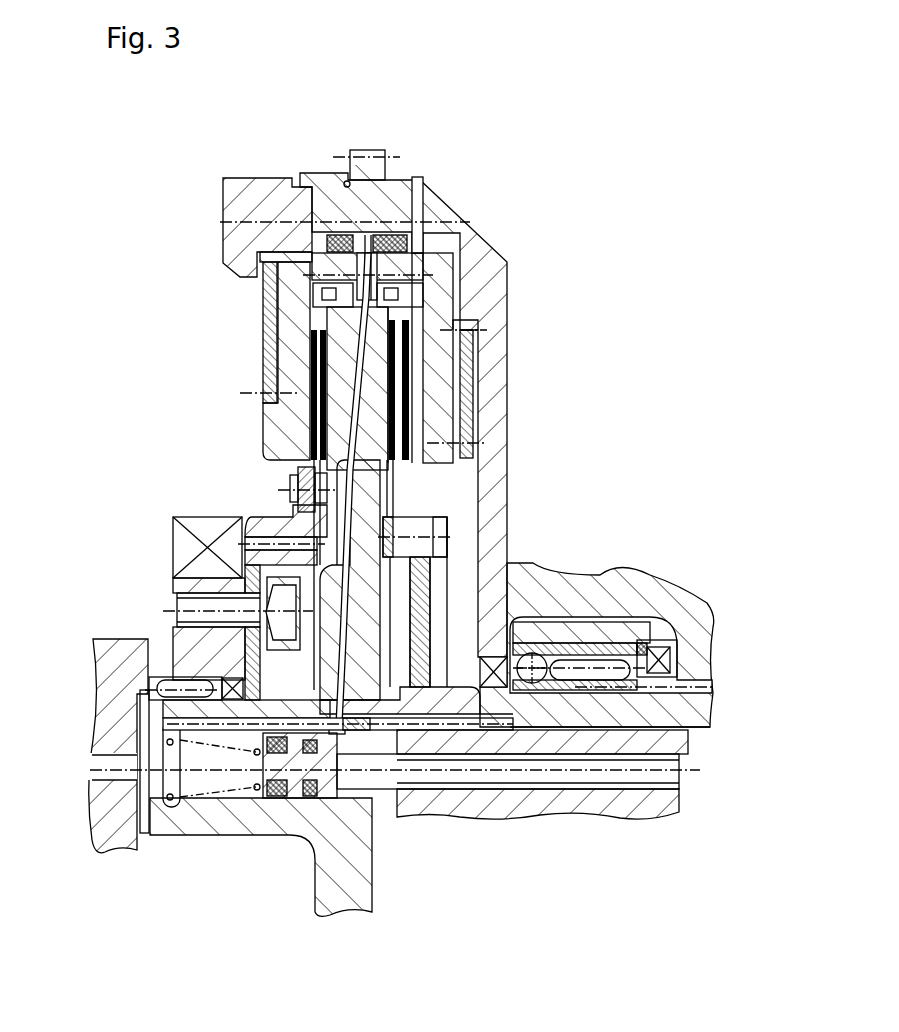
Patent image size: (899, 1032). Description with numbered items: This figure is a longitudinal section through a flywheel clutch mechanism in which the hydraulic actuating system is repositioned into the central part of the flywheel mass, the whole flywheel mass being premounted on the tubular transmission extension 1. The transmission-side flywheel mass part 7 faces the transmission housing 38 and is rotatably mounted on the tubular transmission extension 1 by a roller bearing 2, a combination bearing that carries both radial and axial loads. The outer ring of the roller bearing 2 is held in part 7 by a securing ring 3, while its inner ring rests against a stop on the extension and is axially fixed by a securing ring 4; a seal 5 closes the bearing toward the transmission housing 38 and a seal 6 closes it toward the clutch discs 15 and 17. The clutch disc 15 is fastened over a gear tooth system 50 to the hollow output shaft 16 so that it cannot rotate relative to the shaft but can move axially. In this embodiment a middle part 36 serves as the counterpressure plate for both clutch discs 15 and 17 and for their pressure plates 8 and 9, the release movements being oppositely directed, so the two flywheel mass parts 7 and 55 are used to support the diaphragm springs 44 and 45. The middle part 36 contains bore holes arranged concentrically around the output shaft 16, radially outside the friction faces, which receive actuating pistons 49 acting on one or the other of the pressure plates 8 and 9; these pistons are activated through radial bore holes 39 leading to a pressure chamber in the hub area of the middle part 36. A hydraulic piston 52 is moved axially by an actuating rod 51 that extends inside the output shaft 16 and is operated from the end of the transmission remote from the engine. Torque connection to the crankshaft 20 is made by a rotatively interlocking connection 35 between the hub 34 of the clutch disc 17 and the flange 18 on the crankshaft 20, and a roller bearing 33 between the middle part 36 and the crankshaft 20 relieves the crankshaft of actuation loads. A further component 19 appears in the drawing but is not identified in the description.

The tubular transmission extension 1 is at (673, 713).
The roller bearing 2 is at (603, 665).
The securing ring 3 is at (640, 645).
The securing ring 4 is at (493, 663).
The seal 5 is at (667, 658).
The seal 6 is at (570, 693).
The flywheel mass part 7 is at (487, 302).
The pressure plate 8 is at (437, 401).
The pressure plate 9 is at (292, 362).
The clutch disc 15 is at (427, 500).
The output shaft 16 is at (632, 798).
The clutch disc 17 is at (278, 478).
The flange 18 is at (260, 560).
The bolt 19 is at (188, 605).
The crankshaft 20 is at (115, 688).
The roller bearing 33 is at (185, 687).
The hub 34 is at (275, 540).
The rotatively interlocking connection 35 is at (257, 530).
The middle part 36 is at (372, 462).
The transmission housing 38 is at (613, 603).
The radial bore holes 39 is at (357, 452).
The diaphragm spring 44 is at (467, 363).
The diaphragm spring 45 is at (270, 317).
The actuating pistons 49 is at (427, 202).
The gear tooth system 50 is at (450, 723).
The actuating rod 51 is at (553, 777).
The hydraulic piston 52 is at (298, 760).
The flywheel mass part 55 is at (248, 203).